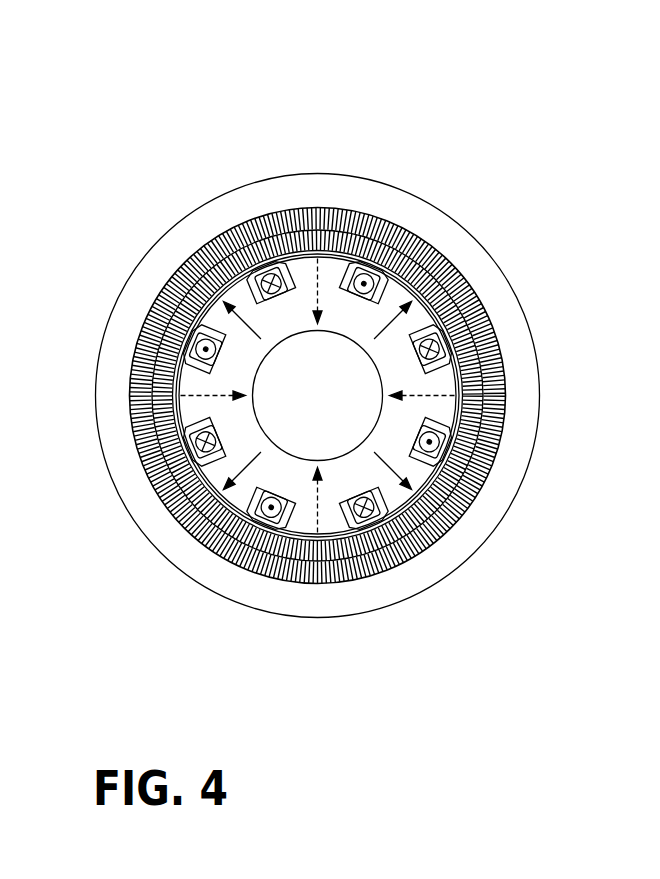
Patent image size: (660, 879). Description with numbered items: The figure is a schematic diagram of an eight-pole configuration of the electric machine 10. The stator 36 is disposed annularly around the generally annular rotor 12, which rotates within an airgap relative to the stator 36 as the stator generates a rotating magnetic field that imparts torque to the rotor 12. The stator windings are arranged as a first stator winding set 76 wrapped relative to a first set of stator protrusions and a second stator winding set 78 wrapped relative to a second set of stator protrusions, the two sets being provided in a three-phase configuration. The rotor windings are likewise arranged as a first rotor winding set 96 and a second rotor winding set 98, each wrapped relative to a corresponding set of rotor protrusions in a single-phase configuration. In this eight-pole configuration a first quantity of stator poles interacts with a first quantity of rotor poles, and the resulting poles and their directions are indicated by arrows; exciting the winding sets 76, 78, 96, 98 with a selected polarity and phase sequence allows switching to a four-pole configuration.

The electric machine 10 is at (321, 329).
The rotor 12 is at (395, 288).
The stator 36 is at (460, 220).
The first stator winding set 76 is at (468, 282).
The second stator winding set 78 is at (477, 327).
The first rotor winding set 96 is at (157, 363).
The second rotor winding set 98 is at (145, 462).